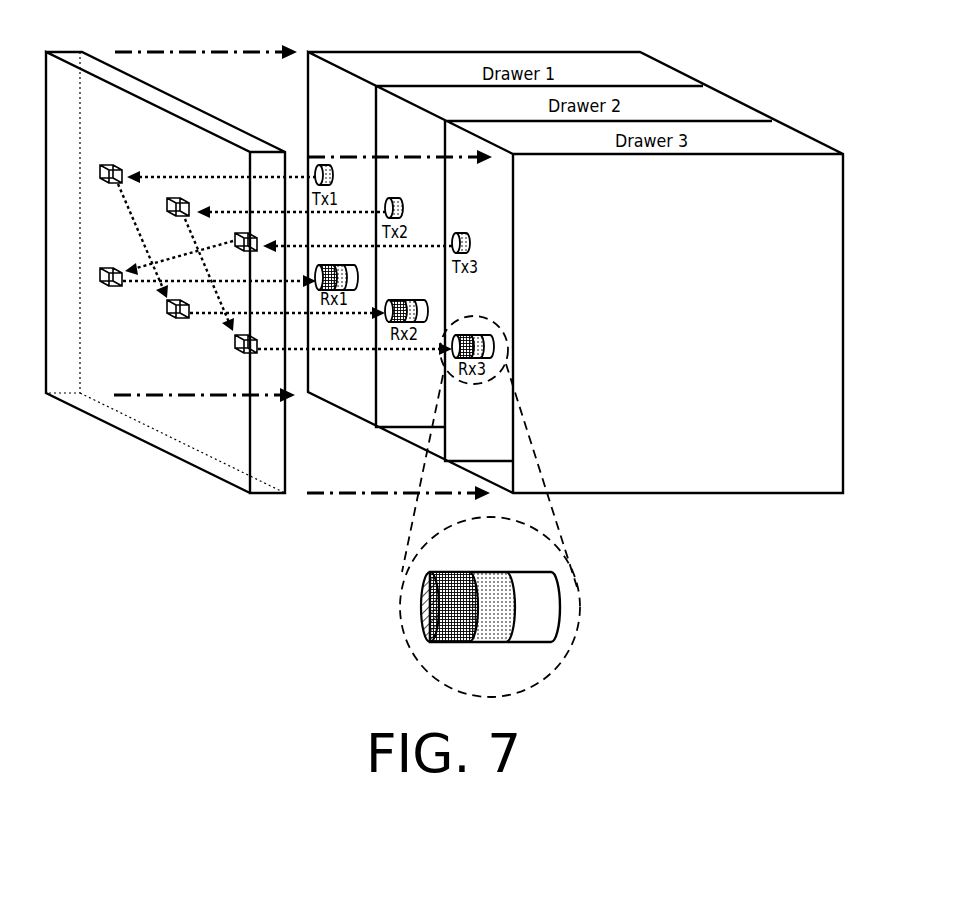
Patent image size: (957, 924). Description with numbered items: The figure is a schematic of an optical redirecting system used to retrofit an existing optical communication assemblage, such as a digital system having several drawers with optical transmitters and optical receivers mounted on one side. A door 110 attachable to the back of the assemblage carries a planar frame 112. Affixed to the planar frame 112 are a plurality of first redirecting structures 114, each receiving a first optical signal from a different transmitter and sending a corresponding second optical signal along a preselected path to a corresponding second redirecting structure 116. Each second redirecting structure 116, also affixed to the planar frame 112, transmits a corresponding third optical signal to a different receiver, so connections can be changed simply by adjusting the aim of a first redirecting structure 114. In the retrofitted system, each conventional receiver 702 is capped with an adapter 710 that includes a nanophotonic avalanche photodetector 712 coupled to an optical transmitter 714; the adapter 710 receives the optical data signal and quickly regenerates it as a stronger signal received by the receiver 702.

The door 110 is at (63, 51).
The planar frame 112 is at (45, 258).
The first redirecting structure 114 is at (112, 167).
The second redirecting structure 116 is at (116, 287).
The conventional receiver 702 is at (490, 615).
The adapter 710 is at (474, 615).
The nanophotonic avalanche photodetector 712 is at (462, 572).
The optical transmitter 714 is at (490, 572).